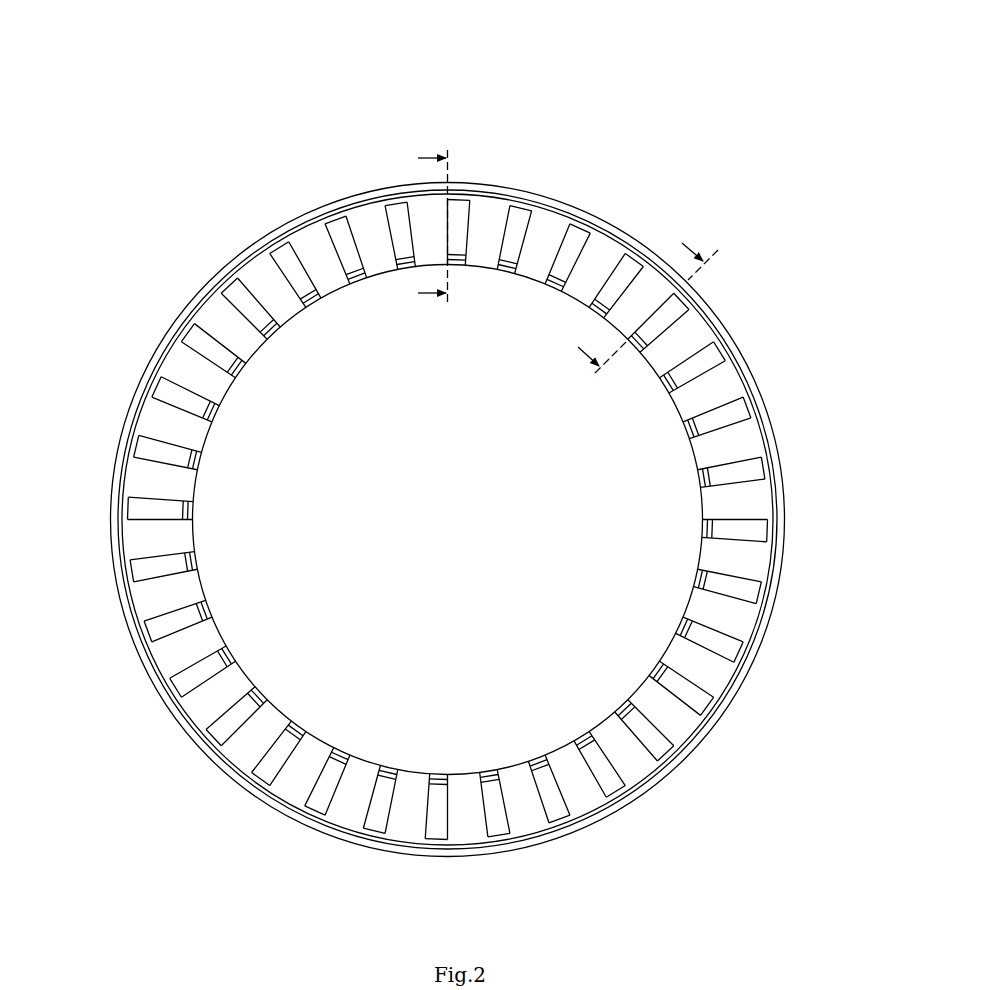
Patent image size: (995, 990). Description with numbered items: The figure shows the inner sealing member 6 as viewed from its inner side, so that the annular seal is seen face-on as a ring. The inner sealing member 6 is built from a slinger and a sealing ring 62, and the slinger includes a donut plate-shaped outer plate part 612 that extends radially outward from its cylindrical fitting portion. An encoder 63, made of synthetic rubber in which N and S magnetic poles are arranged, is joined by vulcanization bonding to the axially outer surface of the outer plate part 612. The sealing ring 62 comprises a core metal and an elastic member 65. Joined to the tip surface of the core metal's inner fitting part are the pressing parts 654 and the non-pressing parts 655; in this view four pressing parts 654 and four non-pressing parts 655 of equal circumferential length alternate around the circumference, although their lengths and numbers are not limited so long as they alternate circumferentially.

The inner sealing member 6 is at (181, 188).
The sealing ring 62 is at (502, 186).
The outer plate part 612 is at (693, 330).
The encoder 63 is at (712, 357).
The elastic member 65 is at (633, 83).
The pressing part 654 is at (607, 225).
The non-pressing part 655 is at (522, 195).